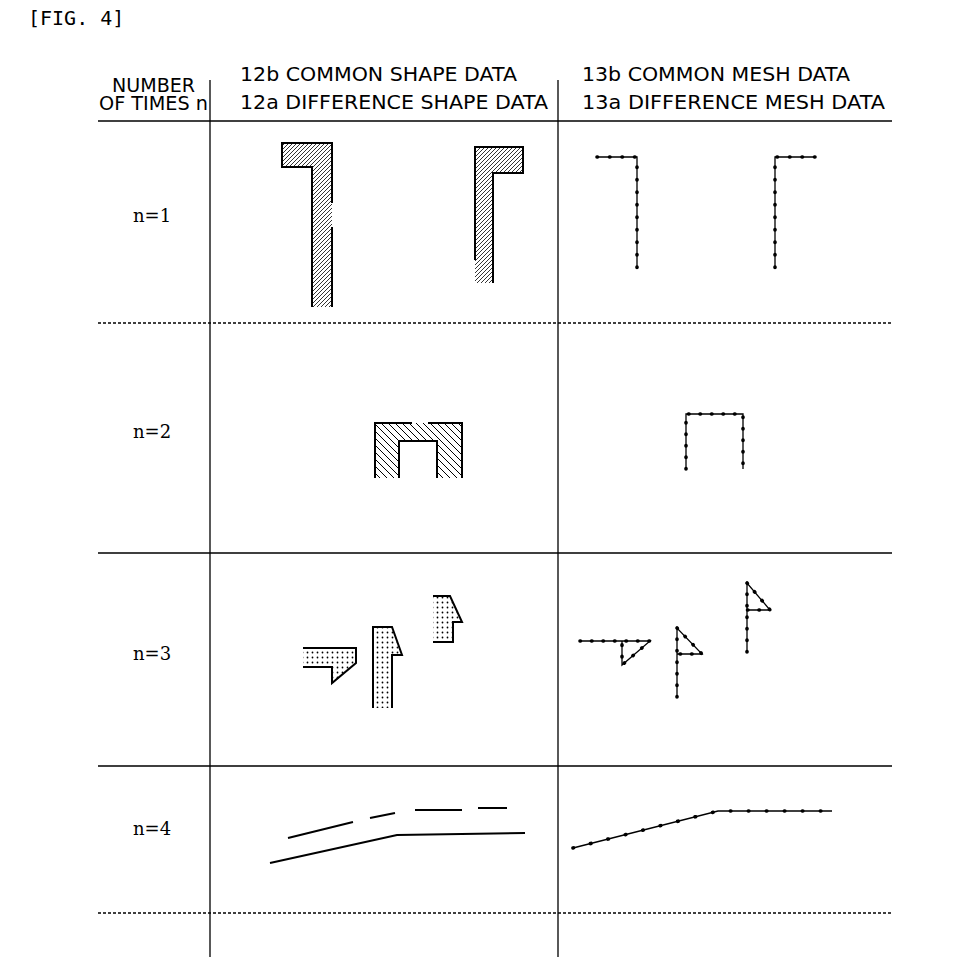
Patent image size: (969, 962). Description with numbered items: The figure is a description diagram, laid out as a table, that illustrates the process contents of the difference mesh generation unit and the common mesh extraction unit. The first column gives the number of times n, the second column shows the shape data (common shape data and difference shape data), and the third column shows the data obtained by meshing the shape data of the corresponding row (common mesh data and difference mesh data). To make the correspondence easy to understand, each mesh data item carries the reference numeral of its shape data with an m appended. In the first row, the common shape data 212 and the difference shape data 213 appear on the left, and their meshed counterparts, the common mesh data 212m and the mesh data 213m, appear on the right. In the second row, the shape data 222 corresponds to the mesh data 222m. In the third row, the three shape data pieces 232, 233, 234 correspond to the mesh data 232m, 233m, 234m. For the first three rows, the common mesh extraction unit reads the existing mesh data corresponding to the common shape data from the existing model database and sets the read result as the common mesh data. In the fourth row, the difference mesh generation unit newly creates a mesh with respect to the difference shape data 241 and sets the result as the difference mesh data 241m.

The common shape data 212 is at (333, 183).
The difference shape data 213 is at (475, 228).
The common mesh data 212m is at (637, 195).
The mesh data 213m is at (772, 242).
The shape data 222 is at (465, 443).
The mesh data 222m is at (743, 437).
The shape data 232 is at (306, 648).
The shape data 233 is at (382, 627).
The shape data 234 is at (453, 641).
The mesh data 232m is at (603, 641).
The mesh data 233m is at (677, 628).
The mesh data 234m is at (747, 652).
The difference shape data 241 is at (482, 805).
The difference mesh data 241m is at (817, 810).